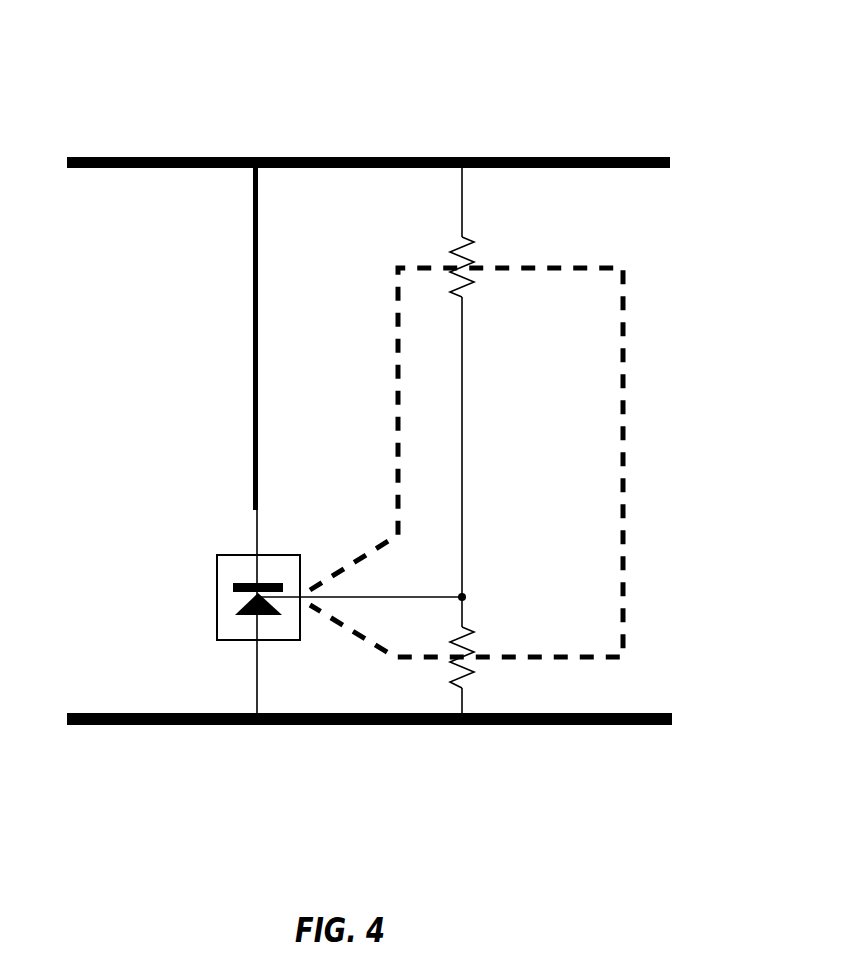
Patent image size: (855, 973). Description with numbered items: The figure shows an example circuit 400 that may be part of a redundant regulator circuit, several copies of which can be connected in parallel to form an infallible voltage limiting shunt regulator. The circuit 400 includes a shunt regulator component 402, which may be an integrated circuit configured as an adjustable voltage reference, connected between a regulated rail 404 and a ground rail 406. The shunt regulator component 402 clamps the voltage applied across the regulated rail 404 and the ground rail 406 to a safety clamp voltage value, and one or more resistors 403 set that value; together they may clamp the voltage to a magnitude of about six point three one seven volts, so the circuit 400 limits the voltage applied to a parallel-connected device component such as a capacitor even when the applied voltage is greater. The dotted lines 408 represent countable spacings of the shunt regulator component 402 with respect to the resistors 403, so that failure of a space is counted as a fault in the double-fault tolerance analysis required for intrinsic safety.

The example circuit 400 is at (99, 37).
The shunt regulator component 402 is at (223, 615).
The resistors 403 is at (460, 237).
The regulated rail 404 is at (160, 168).
The ground rail 406 is at (633, 725).
The dotted lines 408 is at (625, 452).